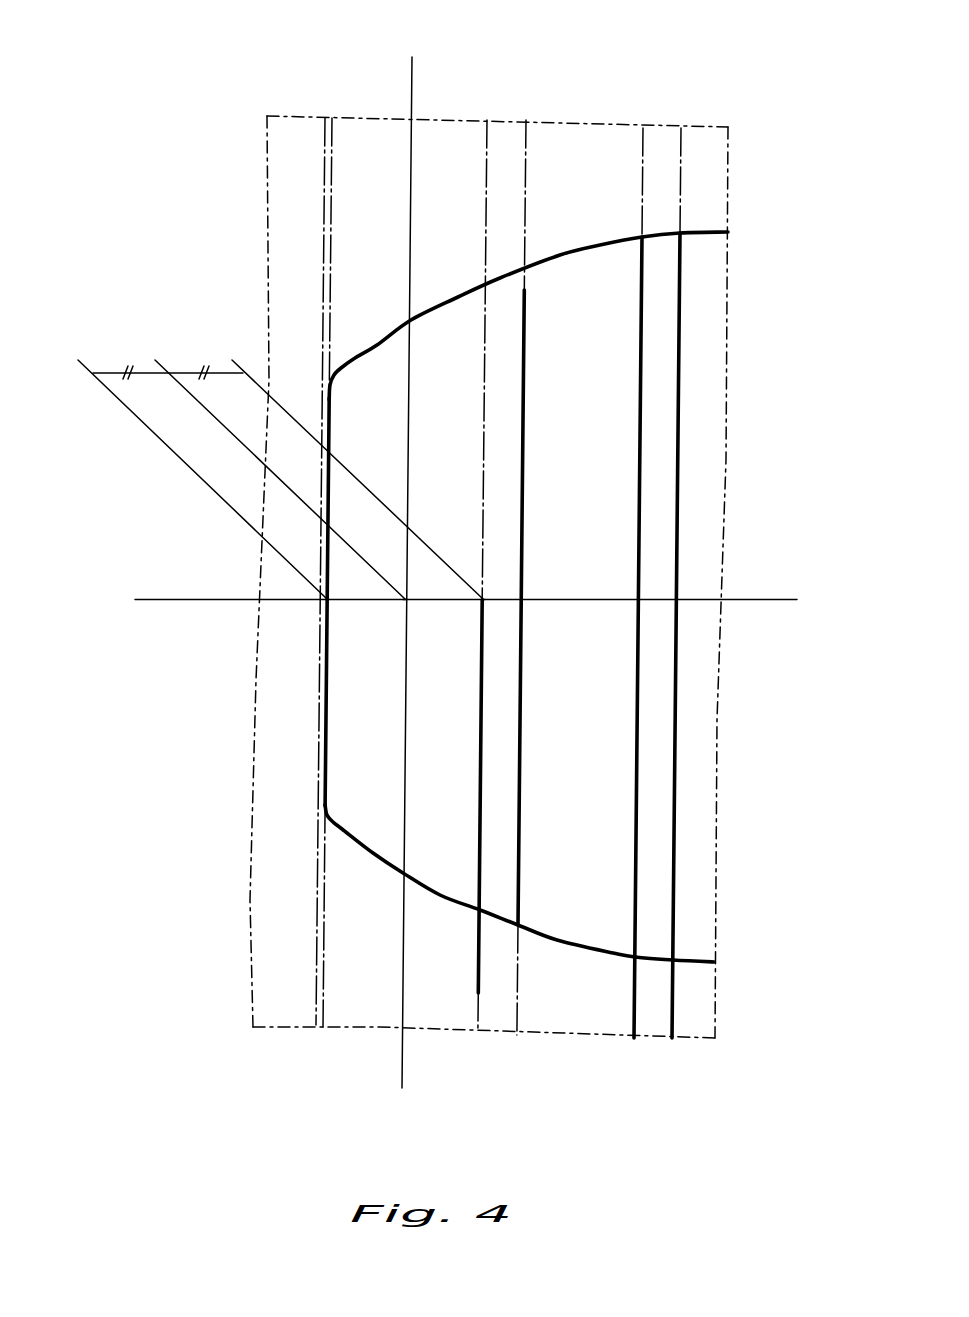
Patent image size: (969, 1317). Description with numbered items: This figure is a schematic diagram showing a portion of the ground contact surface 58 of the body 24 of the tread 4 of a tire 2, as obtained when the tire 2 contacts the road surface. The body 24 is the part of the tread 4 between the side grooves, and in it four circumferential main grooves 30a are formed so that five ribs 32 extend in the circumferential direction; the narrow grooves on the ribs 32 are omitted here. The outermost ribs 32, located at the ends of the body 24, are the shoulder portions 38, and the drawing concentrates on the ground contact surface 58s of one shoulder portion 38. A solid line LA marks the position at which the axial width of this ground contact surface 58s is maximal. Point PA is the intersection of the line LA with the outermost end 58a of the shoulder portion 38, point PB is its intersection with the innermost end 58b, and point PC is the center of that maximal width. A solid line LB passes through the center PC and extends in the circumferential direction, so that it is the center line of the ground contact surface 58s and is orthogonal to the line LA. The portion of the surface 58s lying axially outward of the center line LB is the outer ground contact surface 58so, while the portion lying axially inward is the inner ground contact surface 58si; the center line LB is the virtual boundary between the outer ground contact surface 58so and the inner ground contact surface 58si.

The tire 2 is at (613, 955).
The tread 4 is at (703, 230).
The body 24 is at (721, 582).
The main groove 30a is at (508, 292).
The rib 32 is at (440, 893).
The shoulder portion 38 is at (526, 636).
The ground contact surface 58 is at (581, 270).
The outermost end 58a is at (326, 732).
The innermost end 58b is at (483, 667).
The ground contact surface of the shoulder portion 58s is at (140, 118).
The inner ground contact surface 58si is at (458, 310).
The outer ground contact surface 58so is at (377, 367).
The solid line LA is at (157, 599).
The center line LB is at (413, 76).
The point of intersection PA is at (327, 600).
The point of intersection PB is at (483, 598).
The center PC is at (405, 600).